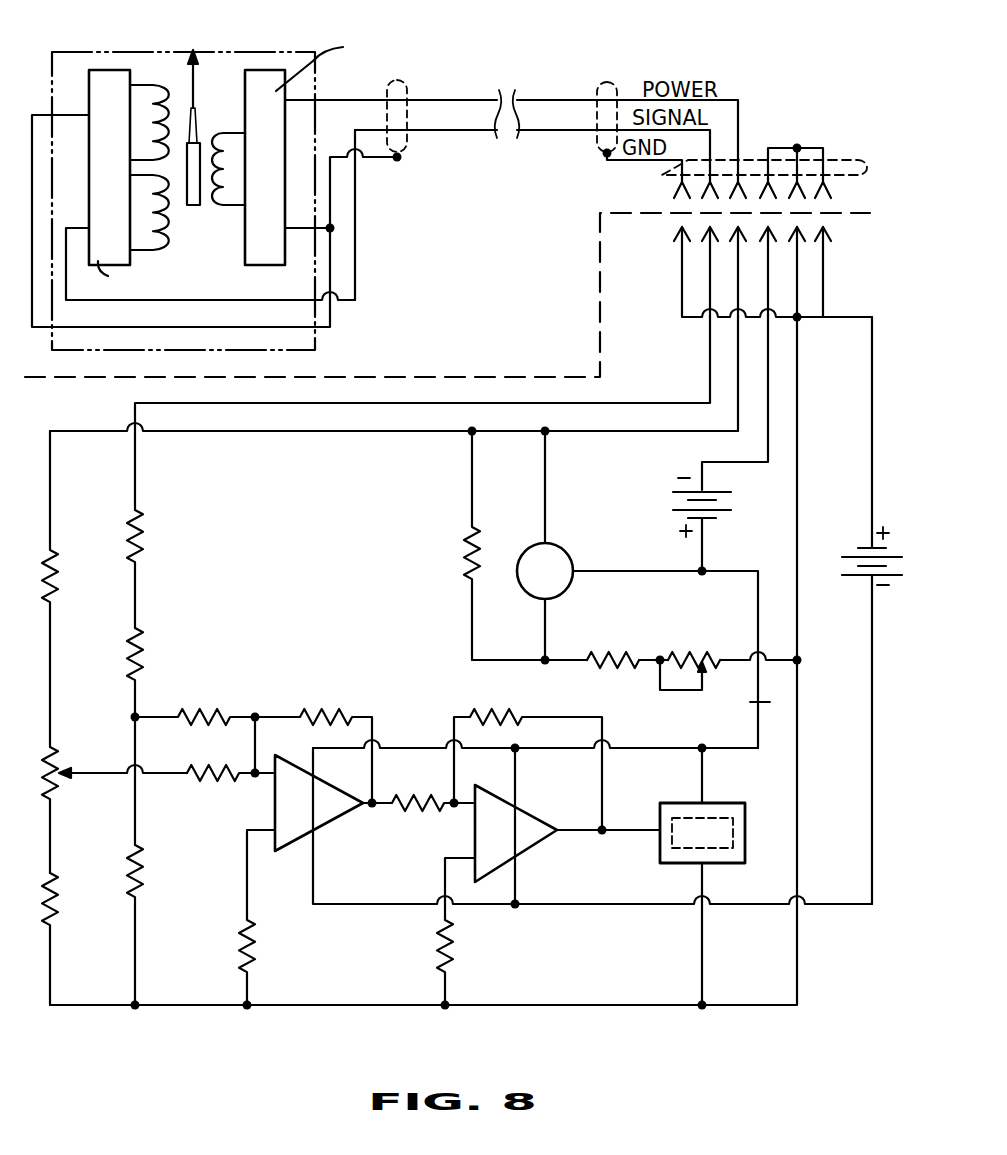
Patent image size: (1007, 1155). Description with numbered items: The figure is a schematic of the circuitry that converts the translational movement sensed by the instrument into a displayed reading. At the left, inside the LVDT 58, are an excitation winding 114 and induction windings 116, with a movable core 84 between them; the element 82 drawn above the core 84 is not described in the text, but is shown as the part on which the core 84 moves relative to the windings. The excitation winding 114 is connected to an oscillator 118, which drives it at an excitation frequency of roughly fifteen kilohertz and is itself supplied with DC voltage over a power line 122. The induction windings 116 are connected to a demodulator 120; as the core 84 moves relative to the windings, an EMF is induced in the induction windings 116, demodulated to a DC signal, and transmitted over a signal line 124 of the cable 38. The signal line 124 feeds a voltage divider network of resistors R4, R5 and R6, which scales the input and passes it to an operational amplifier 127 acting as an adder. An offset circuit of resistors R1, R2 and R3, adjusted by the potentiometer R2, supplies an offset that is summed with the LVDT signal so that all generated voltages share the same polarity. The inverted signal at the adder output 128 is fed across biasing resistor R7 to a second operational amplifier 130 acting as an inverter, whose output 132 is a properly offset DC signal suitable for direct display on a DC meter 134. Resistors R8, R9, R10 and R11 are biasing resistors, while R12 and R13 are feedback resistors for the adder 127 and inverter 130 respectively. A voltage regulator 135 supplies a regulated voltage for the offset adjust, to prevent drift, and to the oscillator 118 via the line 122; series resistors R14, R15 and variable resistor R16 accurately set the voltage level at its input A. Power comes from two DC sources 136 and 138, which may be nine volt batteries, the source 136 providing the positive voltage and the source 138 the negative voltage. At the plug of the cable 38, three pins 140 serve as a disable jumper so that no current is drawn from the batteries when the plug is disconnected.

The cable 38 is at (854, 170).
The LVDT 58 is at (316, 343).
The plunger / indicator arm 82 is at (197, 110).
The core 84 is at (195, 207).
The excitation winding 114 is at (233, 208).
The induction windings 116 is at (150, 87).
The oscillator 118 is at (270, 67).
The demodulator 120 is at (112, 67).
The power line 122 is at (425, 101).
The signal line 124 is at (357, 243).
The operational amplifier 127 is at (333, 822).
The output of adder 128 is at (508, 377).
The operational amplifier 130 is at (533, 843).
The output 132 is at (602, 835).
The DC meter 134 is at (717, 866).
The voltage regulator 135 is at (565, 553).
The DC source 136 is at (725, 524).
The DC source 138 is at (861, 610).
The pins 140 is at (795, 145).
The resistor R1 is at (63, 589).
The potentiometer R2 is at (114, 807).
The resistor R3 is at (68, 939).
The resistor R4 is at (152, 569).
The resistor R5 is at (152, 736).
The resistor R6 is at (152, 925).
The biasing resistor R7 is at (423, 790).
The biasing resistor R8 is at (195, 701).
The biasing resistor R9 is at (231, 790).
The biasing resistor R10 is at (270, 917).
The biasing resistor R11 is at (468, 931).
The feedback resistor R12 is at (313, 740).
The feedback resistor R13 is at (528, 754).
The resistor R14 is at (445, 545).
The resistor R15 is at (627, 646).
The variable resistor R16 is at (728, 657).